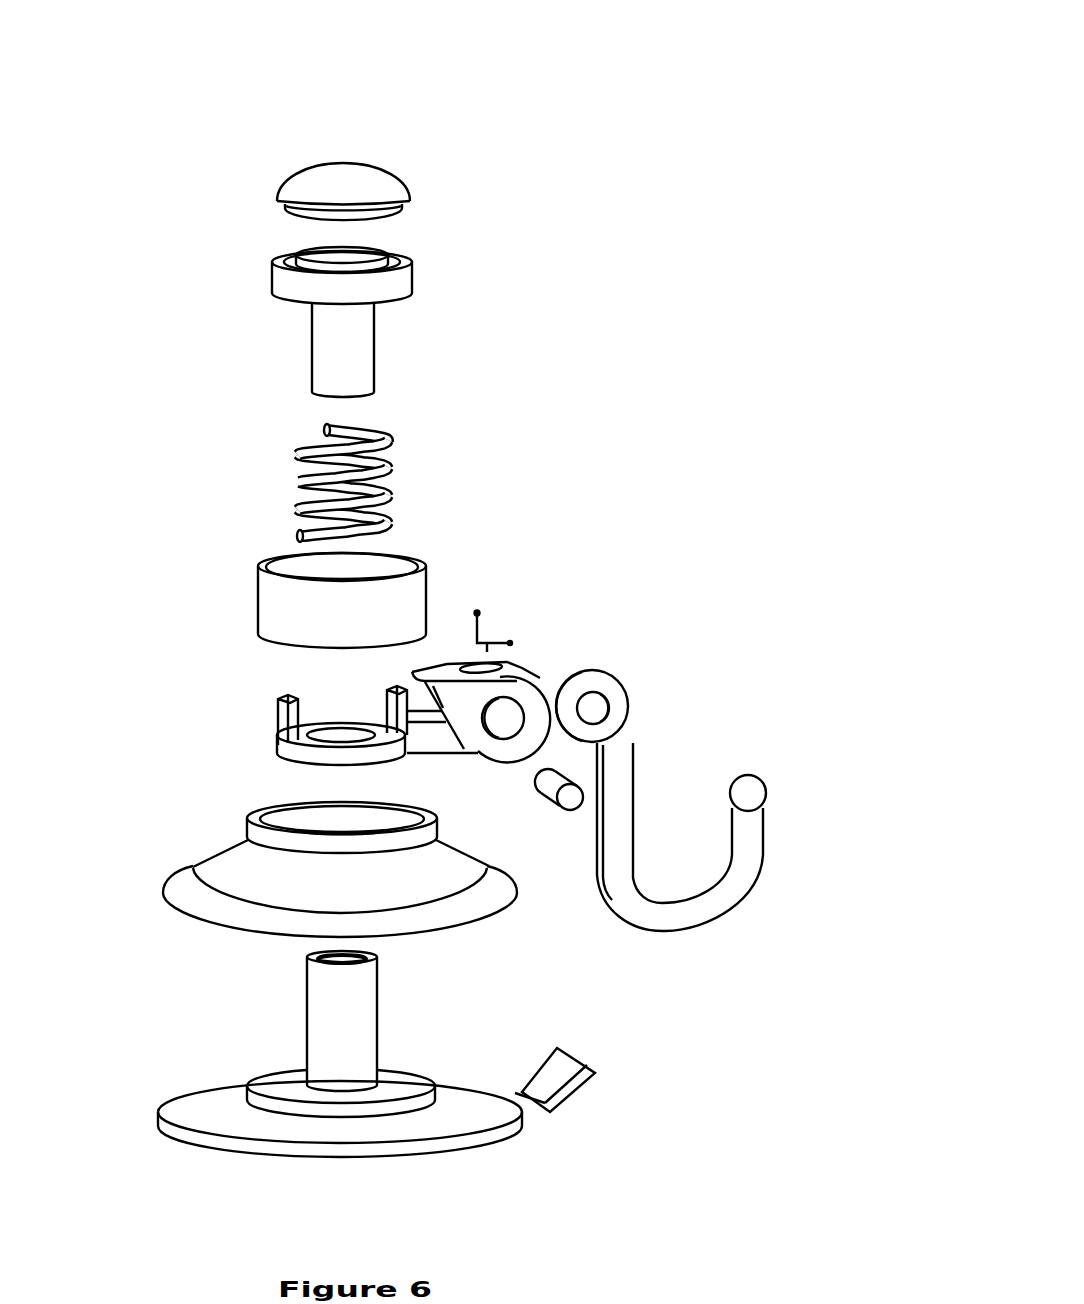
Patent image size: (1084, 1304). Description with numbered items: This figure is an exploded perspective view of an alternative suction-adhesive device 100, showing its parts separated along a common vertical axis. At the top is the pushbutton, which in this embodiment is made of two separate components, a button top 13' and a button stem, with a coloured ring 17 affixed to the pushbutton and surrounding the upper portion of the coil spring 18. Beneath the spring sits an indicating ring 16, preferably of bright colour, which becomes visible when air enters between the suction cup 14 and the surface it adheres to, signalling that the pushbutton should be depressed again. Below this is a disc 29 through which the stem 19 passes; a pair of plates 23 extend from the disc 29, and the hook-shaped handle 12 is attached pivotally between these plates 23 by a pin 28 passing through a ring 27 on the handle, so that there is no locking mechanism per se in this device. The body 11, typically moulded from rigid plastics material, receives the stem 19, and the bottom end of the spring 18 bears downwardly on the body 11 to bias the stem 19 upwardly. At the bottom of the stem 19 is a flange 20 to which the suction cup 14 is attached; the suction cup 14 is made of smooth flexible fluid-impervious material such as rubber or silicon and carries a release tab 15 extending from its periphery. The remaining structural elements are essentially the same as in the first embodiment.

The suction-adhesive device 100 is at (608, 45).
The button top 13' is at (343, 169).
The coloured ring 17 is at (280, 285).
The coil spring 18 is at (392, 463).
The indicating ring 16 is at (270, 594).
The disc 29 is at (292, 738).
The plates 23 is at (508, 688).
The ring 27 is at (622, 690).
The hook-shaped handle 12 is at (707, 912).
The pin 28 is at (570, 810).
The body 11 is at (180, 884).
The stem 19 is at (368, 1000).
The flange 20 is at (290, 1080).
The suction cup 14 is at (175, 1101).
The release tab 15 is at (573, 1088).